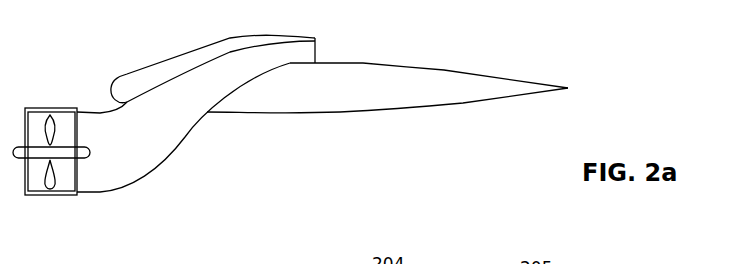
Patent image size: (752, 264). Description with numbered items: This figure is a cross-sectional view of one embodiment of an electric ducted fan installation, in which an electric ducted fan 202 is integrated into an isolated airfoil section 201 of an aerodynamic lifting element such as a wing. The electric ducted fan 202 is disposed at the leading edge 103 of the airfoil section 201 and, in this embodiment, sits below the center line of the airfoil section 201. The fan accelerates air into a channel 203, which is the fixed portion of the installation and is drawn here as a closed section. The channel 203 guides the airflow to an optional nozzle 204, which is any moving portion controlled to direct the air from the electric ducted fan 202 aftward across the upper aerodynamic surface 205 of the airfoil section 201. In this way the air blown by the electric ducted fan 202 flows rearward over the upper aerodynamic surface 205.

The leading edge 103 is at (108, 84).
The airfoil section 201 is at (400, 109).
The electric ducted fan 202 is at (47, 195).
The channel 203 is at (152, 144).
The nozzle 204 is at (318, 49).
The upper aerodynamic surface 205 is at (444, 70).